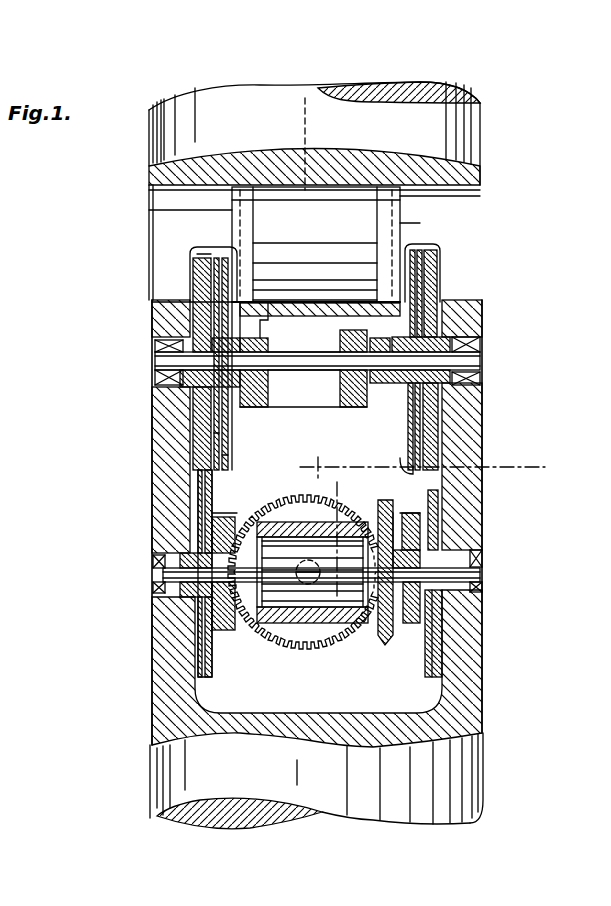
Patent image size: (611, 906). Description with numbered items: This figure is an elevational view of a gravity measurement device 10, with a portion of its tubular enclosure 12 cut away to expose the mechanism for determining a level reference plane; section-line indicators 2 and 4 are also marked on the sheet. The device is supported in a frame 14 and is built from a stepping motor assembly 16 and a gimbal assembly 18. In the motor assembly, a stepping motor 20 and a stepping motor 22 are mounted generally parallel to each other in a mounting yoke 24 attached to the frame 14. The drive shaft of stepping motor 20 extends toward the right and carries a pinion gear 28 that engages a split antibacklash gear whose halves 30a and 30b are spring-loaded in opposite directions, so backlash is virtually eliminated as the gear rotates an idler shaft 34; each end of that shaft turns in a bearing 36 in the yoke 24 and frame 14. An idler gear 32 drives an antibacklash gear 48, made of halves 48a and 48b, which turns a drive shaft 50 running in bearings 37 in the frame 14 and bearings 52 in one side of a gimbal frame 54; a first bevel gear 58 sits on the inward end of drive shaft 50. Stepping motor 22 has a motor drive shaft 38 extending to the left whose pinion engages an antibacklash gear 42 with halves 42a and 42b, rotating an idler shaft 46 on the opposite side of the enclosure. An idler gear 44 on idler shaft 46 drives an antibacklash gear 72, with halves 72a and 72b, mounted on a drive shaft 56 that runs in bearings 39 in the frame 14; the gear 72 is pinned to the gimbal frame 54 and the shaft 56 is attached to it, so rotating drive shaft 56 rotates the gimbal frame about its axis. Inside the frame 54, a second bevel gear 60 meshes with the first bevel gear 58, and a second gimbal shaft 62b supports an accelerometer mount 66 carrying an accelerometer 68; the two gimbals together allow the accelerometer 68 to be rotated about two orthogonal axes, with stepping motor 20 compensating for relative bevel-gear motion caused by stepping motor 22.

The section line 2- 2 is at (522, 470).
The section line 4- 4 is at (150, 574).
The gravity measurement device 10 is at (134, 297).
The tubular enclosure 12 is at (150, 782).
The frame 14 is at (165, 398).
The stepping motor assembly 16 is at (456, 238).
The gimbal assembly 18 is at (418, 682).
The stepping motor 20 is at (448, 198).
The stepping motor 22 is at (232, 207).
The mounting yoke 24 is at (352, 408).
The pinion gear 28 is at (441, 261).
The antibacklash gear half 30a is at (436, 468).
The antibacklash gear half 30b is at (436, 449).
The idler gear 32 is at (438, 283).
The idler shaft 34 is at (470, 357).
The bearing 36 is at (165, 378).
The bearings 37 is at (480, 560).
The motor drive shaft 38 is at (200, 249).
The bearings 39 is at (160, 588).
The antibacklash gear 42 is at (232, 380).
The antibacklash gear half 42a is at (226, 457).
The antibacklash gear half 42b is at (215, 433).
The idler gear 44 is at (214, 266).
The idler shaft 46 is at (172, 350).
The antibacklash gear 48 is at (470, 613).
The antibacklash gear half 48a is at (417, 648).
The antibacklash gear half 48b is at (444, 515).
The drive shaft 50 is at (482, 578).
The bearings 52 is at (470, 633).
The gimbal frame 54 is at (172, 655).
The drive shaft 56 is at (178, 562).
The first bevel gear 58 is at (447, 498).
The second bevel gear 60 is at (422, 526).
The second gimbal shaft 62b is at (328, 650).
The accelerometer mount 66 is at (290, 622).
The accelerometer 68 is at (348, 606).
The antibacklash gear 72 is at (175, 627).
The antibacklash gear half 72a is at (205, 515).
The antibacklash gear half 72b is at (200, 490).